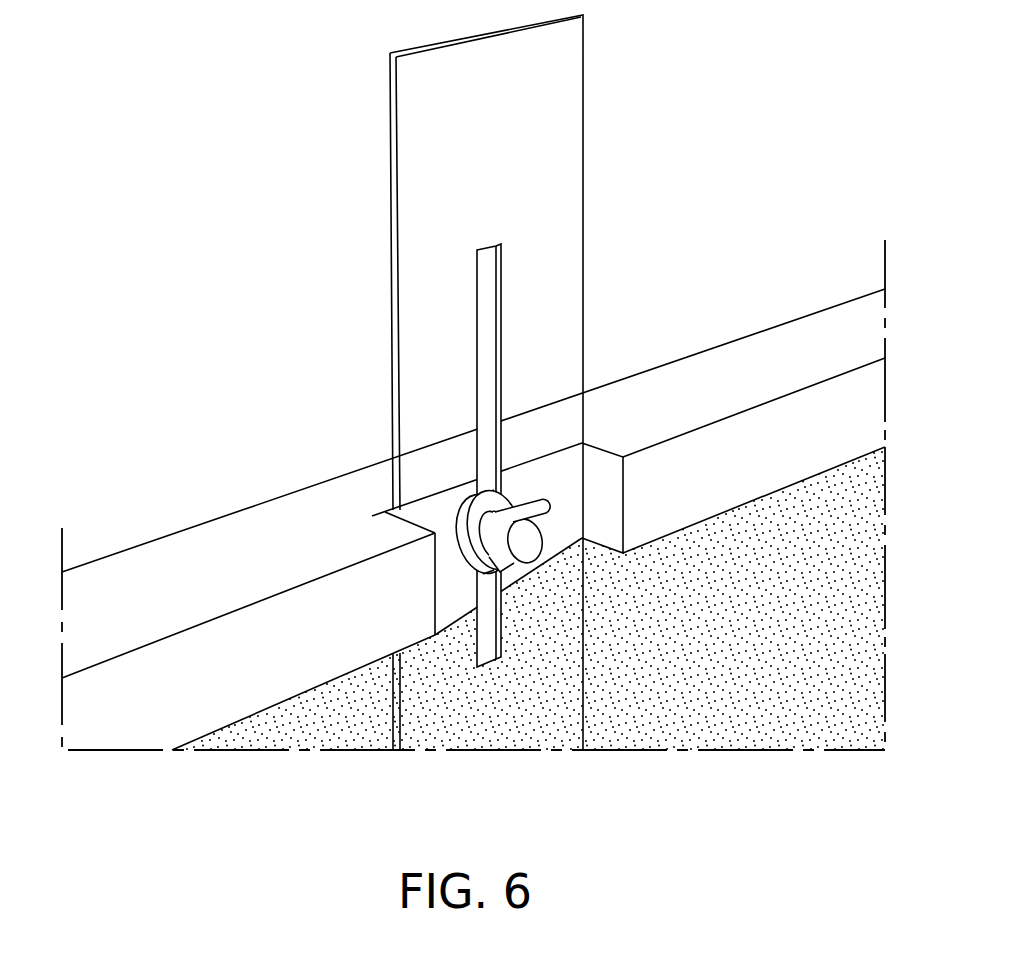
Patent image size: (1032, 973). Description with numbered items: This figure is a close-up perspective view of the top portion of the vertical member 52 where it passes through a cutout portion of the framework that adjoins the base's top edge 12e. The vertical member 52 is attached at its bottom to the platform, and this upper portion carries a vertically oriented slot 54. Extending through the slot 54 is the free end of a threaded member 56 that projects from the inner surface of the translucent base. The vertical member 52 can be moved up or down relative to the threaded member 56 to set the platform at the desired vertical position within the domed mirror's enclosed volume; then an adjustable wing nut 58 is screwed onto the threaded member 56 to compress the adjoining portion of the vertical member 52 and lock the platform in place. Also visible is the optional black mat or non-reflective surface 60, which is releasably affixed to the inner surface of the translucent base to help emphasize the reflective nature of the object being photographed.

The top edge 12e is at (198, 543).
The vertical member 52 is at (565, 127).
The slot 54 is at (485, 307).
The threaded member 56 is at (495, 525).
The wing nut 58 is at (535, 502).
The non-reflective surface 60 is at (315, 733).